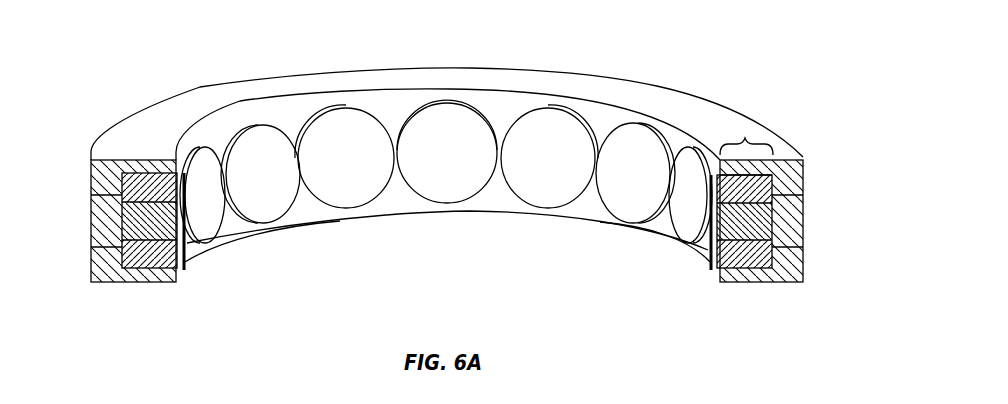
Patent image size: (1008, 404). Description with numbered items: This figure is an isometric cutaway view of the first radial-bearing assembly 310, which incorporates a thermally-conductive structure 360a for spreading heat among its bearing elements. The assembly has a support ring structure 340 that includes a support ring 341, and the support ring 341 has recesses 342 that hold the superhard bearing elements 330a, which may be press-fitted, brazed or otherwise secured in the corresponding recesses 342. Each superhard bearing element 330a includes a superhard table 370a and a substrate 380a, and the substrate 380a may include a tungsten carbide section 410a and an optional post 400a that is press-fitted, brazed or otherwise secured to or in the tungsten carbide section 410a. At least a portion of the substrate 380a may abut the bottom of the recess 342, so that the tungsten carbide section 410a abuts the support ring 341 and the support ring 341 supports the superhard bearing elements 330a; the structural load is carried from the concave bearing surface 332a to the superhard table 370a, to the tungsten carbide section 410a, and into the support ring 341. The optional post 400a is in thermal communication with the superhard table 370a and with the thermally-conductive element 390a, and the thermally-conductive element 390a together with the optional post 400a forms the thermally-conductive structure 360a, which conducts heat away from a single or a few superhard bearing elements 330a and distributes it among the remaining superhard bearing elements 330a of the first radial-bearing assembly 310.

The first radial-bearing assembly 310 is at (713, 37).
The concave bearing surface 332a is at (688, 163).
The support ring structure 340 is at (176, 293).
The support ring 341 is at (95, 262).
The recess 342 is at (152, 164).
The thermally-conductive structure 360a is at (818, 237).
The superhard table 370a is at (710, 262).
The substrate 380a is at (745, 137).
The thermally-conductive element 390a is at (756, 222).
The optional post 400a is at (793, 227).
The tungsten carbide section 410a is at (757, 253).
The superhard bearing element 330a is at (708, 282).